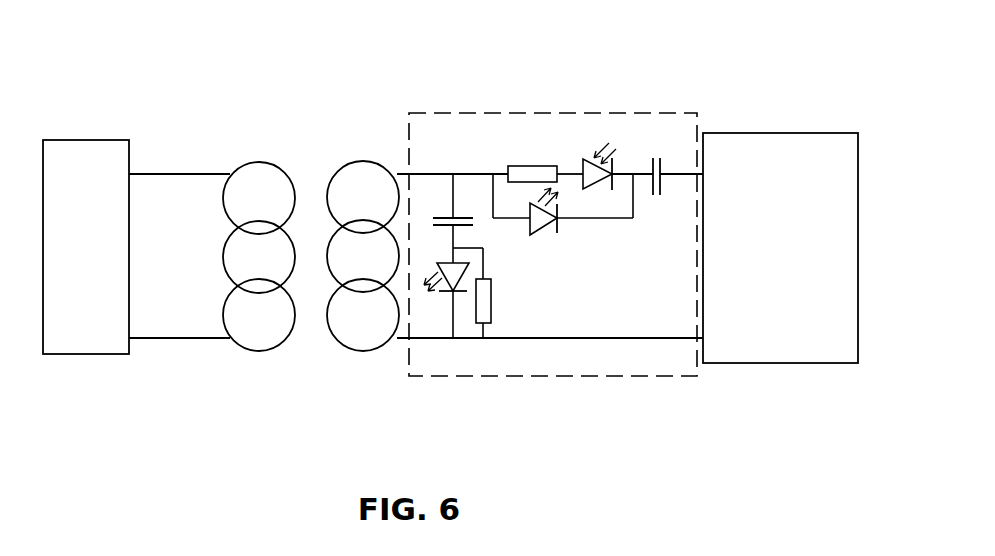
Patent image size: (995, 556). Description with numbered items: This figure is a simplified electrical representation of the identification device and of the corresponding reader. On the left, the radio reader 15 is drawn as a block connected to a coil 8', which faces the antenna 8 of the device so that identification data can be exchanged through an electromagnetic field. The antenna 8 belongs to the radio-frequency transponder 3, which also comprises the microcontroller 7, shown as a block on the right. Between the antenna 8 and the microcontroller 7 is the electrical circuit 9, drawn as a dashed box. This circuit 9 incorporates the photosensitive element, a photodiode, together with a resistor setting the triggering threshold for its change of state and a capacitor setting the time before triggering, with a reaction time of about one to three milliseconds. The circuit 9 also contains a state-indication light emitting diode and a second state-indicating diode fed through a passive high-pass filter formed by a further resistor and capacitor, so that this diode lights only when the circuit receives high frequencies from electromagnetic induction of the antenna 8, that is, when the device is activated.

The radio reader 15 is at (86, 247).
The primary coil 8' is at (259, 305).
The antenna 8 is at (363, 305).
The electrical circuit 9 is at (550, 122).
The microcontroller 7 is at (780, 248).
The radio-frequency transponder 3 is at (780, 314).